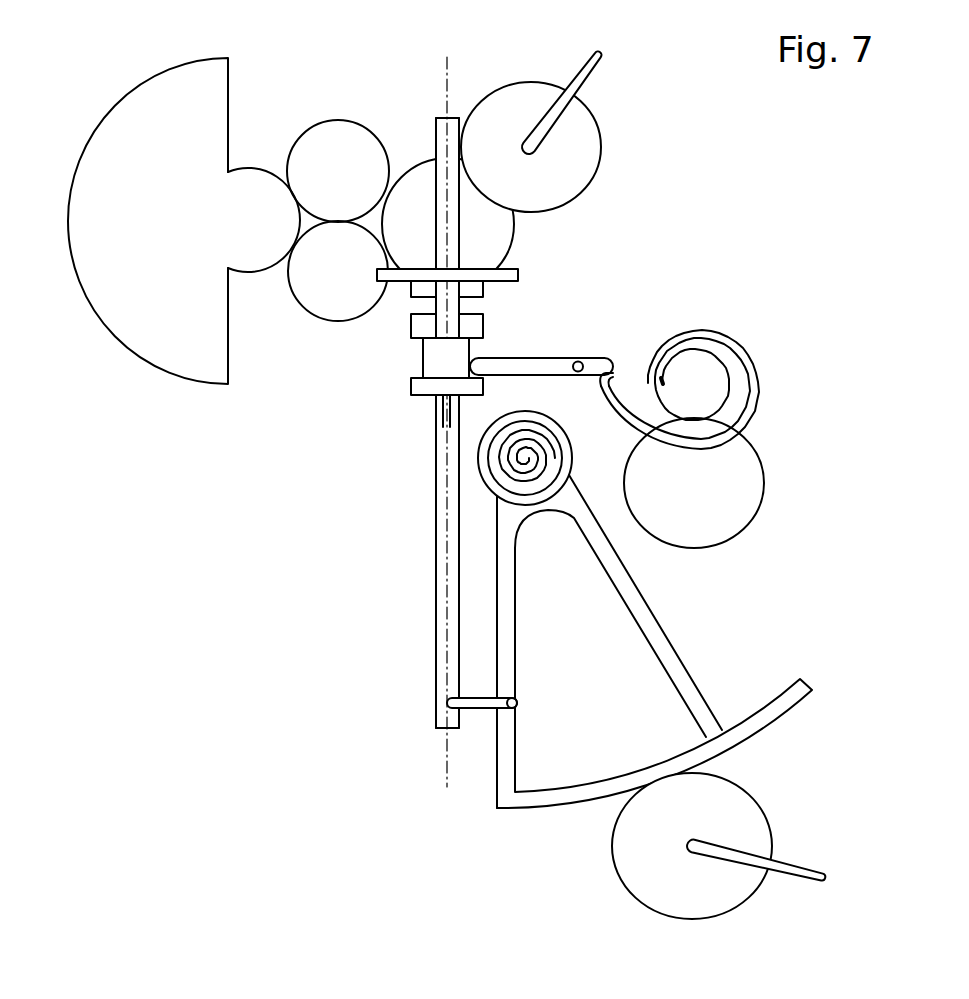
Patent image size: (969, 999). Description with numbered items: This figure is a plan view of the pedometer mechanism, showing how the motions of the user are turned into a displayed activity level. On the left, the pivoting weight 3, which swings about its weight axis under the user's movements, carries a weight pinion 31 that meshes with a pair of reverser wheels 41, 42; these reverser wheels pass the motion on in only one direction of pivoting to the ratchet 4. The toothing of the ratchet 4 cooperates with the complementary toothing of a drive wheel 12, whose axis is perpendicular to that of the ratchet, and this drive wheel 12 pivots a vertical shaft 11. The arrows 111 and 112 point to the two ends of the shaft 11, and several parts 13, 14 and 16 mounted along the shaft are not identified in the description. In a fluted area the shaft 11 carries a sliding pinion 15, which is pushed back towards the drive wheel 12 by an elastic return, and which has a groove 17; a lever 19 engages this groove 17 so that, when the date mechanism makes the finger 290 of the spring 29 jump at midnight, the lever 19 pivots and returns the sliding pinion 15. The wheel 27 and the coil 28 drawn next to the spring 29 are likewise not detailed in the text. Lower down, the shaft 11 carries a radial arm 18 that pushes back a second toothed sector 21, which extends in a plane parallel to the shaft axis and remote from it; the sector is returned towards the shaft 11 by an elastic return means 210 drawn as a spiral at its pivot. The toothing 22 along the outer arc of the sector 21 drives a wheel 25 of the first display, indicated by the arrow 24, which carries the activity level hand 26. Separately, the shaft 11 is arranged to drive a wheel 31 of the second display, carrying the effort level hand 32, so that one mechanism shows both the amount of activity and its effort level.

The weight 3 is at (233, 90).
The weight pinion 31 is at (262, 181).
The effort level hand 32 is at (585, 73).
The reverser wheel 41 is at (306, 293).
The reverser wheel 42 is at (325, 133).
The ratchet 4 is at (425, 168).
The shaft 11 is at (453, 222).
The lower end of shaft 111 is at (435, 744).
The upper end of shaft 112 is at (455, 106).
The drive wheel 12 is at (517, 276).
The collar 13 is at (403, 307).
The pin 14 is at (440, 421).
The sliding pinion 15 is at (428, 389).
The collar 16 is at (487, 304).
The groove 17 is at (483, 351).
The radial arm 18 is at (472, 710).
The lever 19 is at (595, 366).
The second toothed sector 21 is at (672, 656).
The toothing 22 is at (541, 823).
The elastic return means 210 is at (482, 471).
The escapement assembly 24 is at (602, 883).
The wheel 25 is at (656, 900).
The activity level hand 26 is at (812, 874).
The wheel 27 is at (748, 506).
The spring coil 28 is at (735, 397).
The spring 29 is at (712, 337).
The finger 290 is at (614, 376).